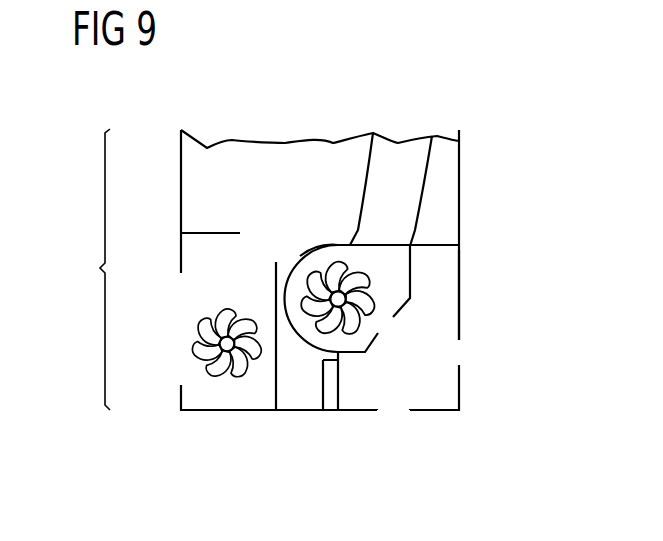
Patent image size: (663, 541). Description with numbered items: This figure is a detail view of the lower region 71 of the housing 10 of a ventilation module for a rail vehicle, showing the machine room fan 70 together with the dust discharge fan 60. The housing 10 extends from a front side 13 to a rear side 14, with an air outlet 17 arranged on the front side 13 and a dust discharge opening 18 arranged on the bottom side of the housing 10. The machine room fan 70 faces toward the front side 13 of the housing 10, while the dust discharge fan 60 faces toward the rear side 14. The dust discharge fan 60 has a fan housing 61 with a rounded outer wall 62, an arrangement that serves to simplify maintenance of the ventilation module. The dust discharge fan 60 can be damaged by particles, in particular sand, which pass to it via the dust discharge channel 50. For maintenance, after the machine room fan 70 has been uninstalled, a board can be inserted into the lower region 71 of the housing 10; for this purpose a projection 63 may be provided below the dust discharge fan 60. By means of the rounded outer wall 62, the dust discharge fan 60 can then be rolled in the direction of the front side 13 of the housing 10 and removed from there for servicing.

The housing 10 is at (461, 191).
The front side 13 is at (181, 178).
The rear side 14 is at (461, 305).
The air outlet 17 is at (188, 377).
The dust discharge opening 18 is at (397, 402).
The dust discharge channel 50 is at (412, 150).
The dust discharge fan 60 is at (380, 288).
The fan housing 61 is at (320, 245).
The rounded outer wall 62 is at (300, 256).
The projection 63 is at (332, 402).
The machine room fan 70 is at (192, 255).
The lower region 71 is at (88, 269).